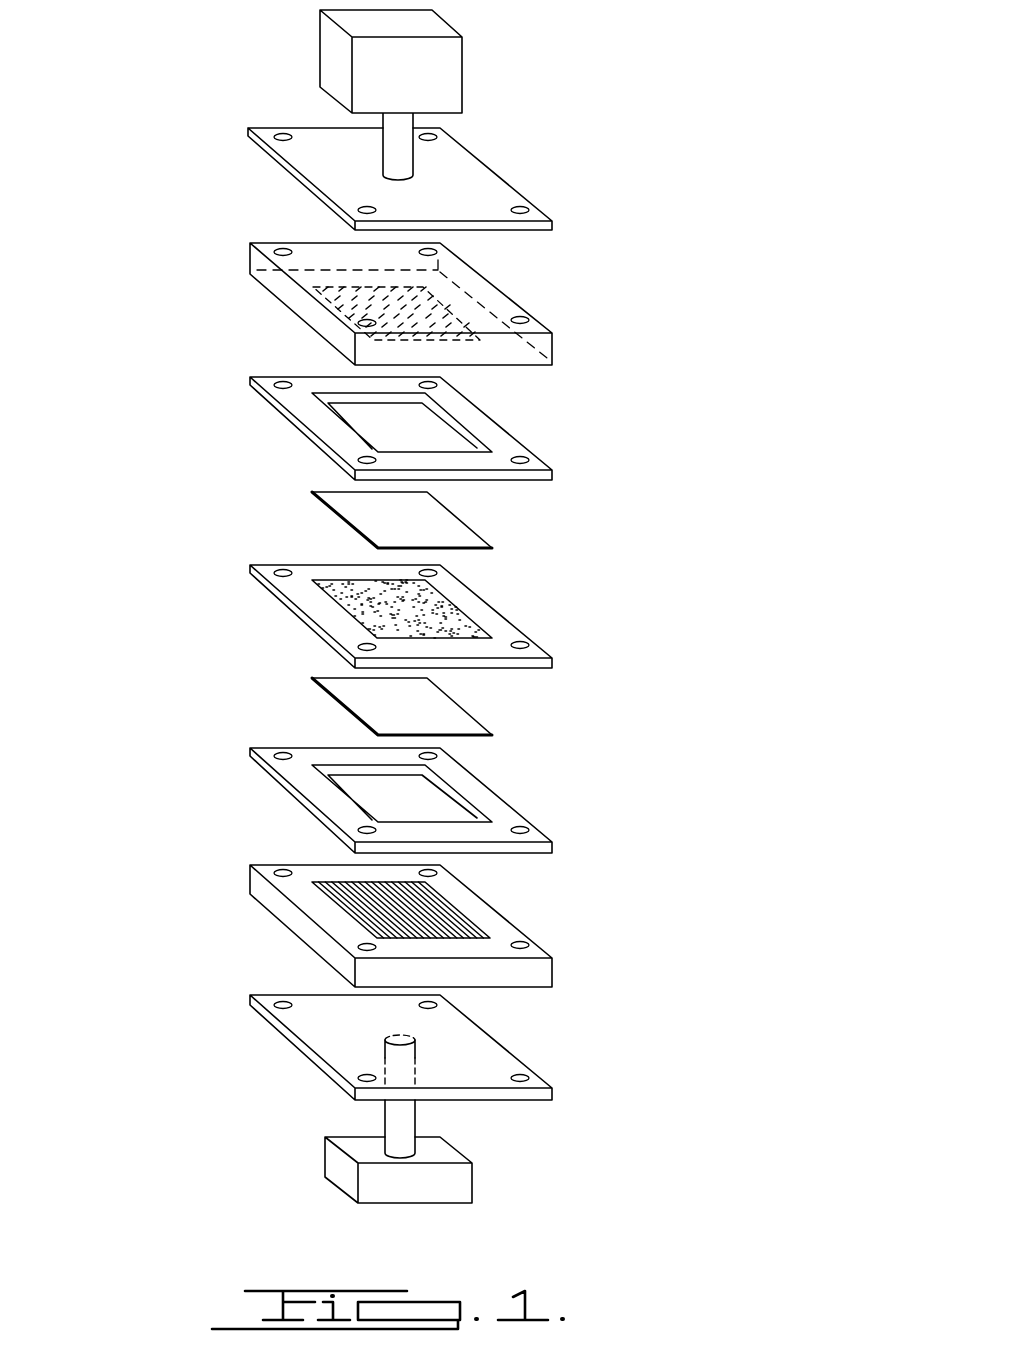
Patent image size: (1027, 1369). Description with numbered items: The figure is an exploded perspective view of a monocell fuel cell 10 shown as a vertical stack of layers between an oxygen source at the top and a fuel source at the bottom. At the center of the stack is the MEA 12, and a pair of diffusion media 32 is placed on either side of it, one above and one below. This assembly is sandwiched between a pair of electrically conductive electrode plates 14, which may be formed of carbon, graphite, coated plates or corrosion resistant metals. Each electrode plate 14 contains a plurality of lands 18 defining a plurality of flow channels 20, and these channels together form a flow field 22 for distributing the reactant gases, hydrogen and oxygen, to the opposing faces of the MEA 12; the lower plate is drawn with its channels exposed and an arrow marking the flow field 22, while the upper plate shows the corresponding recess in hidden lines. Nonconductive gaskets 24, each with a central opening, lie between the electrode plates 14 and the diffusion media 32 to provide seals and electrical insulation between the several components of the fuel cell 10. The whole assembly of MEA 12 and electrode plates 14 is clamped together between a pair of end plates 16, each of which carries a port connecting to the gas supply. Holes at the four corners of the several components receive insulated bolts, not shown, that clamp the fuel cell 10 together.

The monocell fuel cell 10 is at (660, 138).
The MEA 12 is at (487, 618).
The electrode plate 14 is at (503, 300).
The end plate 16 is at (480, 170).
The land 18 is at (330, 883).
The flow channel 20 is at (358, 913).
The flow field 22 is at (423, 920).
The nonconductive gasket 24 is at (487, 422).
The diffusion media 32 is at (460, 533).